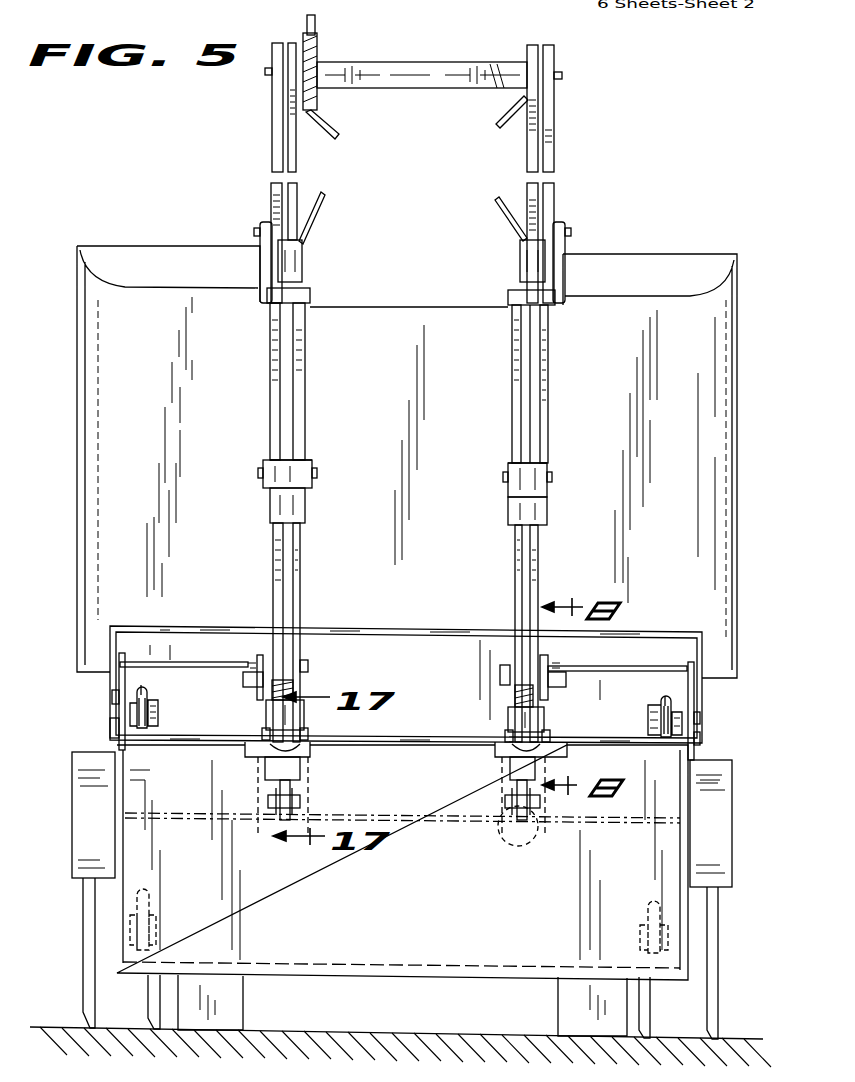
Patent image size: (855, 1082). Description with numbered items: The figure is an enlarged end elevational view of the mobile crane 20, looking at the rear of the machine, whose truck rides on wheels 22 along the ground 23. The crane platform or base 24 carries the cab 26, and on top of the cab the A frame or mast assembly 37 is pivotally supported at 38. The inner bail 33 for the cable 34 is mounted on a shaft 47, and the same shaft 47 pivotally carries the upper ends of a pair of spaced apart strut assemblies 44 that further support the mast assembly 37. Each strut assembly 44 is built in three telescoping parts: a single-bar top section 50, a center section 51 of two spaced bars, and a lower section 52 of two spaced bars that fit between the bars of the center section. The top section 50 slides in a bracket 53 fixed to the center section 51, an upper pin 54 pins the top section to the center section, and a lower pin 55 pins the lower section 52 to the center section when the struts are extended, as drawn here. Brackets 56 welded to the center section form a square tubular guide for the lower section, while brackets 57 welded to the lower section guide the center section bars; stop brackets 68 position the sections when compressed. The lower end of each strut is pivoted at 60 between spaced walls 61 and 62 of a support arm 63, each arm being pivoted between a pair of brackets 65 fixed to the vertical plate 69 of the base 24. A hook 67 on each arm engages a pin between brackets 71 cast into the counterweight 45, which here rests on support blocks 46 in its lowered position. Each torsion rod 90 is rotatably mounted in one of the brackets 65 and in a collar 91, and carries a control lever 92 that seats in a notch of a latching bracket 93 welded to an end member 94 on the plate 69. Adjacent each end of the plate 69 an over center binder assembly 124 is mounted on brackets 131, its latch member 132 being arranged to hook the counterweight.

The mobile crane 20 is at (745, 785).
The wheels 22 is at (107, 990).
The ground 23 is at (385, 1033).
The crane platform or base 24 is at (697, 628).
The cab 26 is at (113, 392).
The inner bail 33 is at (363, 88).
The cable 34 is at (311, 23).
The A frame or mast assembly 37 is at (272, 145).
The pivot 38 is at (254, 232).
The strut assemblies 44 is at (515, 136).
The counterweight 45 is at (135, 885).
The support blocks 46 is at (225, 1015).
The shaft 47 is at (498, 72).
The top section 50 is at (275, 200).
The center section 51 is at (273, 395).
The lower section 52 is at (300, 560).
The bracket 53 is at (303, 246).
The upper pin 54 is at (312, 298).
The lower pin 55 is at (310, 472).
The brackets 56 is at (275, 506).
The brackets 57 is at (278, 460).
The pivot 60 is at (306, 733).
The side wall 61 is at (245, 750).
The side wall 62 is at (310, 752).
The support arms 63 is at (270, 712).
The brackets 65 is at (262, 632).
The hook 67 is at (262, 781).
The stop brackets 68 is at (285, 680).
The vertical plate 69 is at (682, 652).
The brackets 71 is at (302, 800).
The torsion rod or bar 90 is at (195, 662).
The collar 91 is at (118, 653).
The control lever 92 is at (137, 663).
The latching or locking bracket 93 is at (118, 698).
The end members 94 is at (112, 724).
The over center binder assembly 124 is at (159, 690).
The brackets 131 is at (158, 722).
The latch member 132 is at (145, 728).